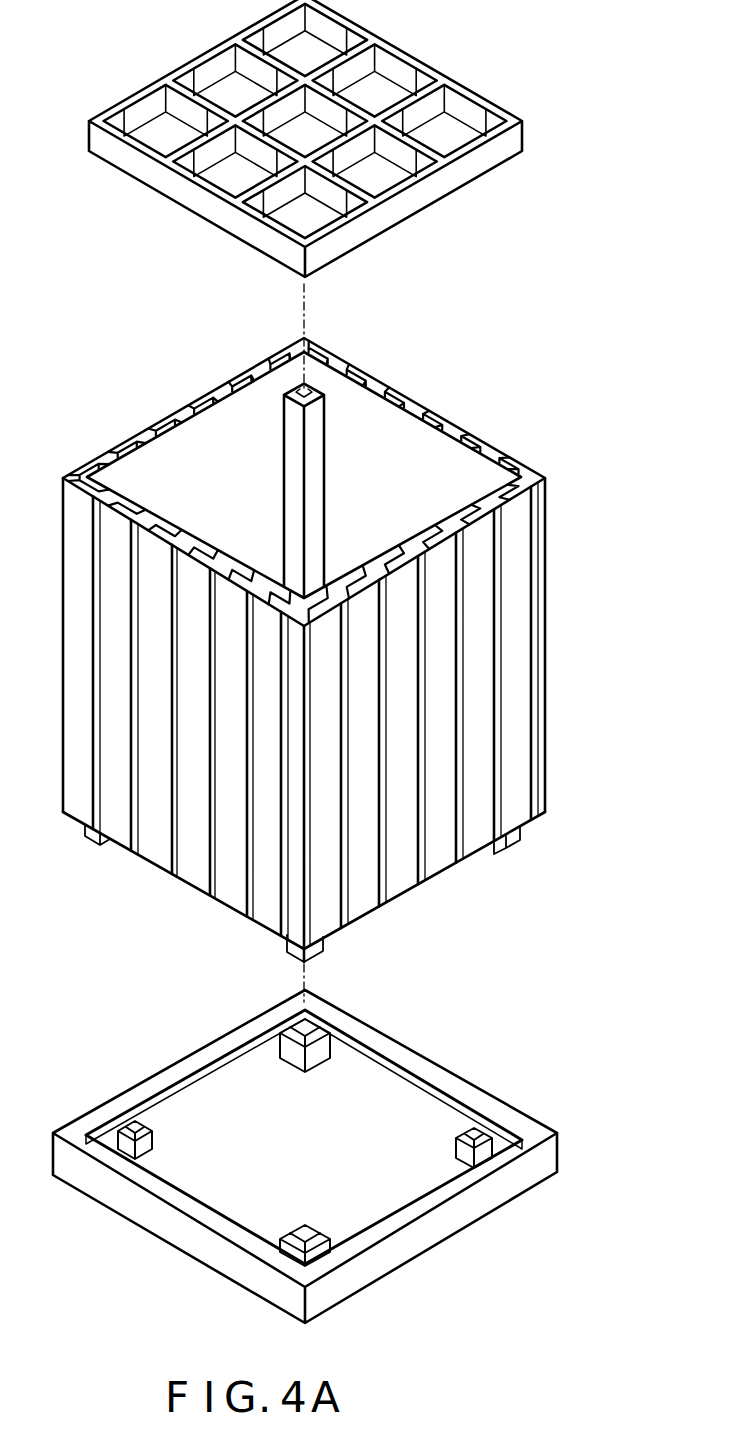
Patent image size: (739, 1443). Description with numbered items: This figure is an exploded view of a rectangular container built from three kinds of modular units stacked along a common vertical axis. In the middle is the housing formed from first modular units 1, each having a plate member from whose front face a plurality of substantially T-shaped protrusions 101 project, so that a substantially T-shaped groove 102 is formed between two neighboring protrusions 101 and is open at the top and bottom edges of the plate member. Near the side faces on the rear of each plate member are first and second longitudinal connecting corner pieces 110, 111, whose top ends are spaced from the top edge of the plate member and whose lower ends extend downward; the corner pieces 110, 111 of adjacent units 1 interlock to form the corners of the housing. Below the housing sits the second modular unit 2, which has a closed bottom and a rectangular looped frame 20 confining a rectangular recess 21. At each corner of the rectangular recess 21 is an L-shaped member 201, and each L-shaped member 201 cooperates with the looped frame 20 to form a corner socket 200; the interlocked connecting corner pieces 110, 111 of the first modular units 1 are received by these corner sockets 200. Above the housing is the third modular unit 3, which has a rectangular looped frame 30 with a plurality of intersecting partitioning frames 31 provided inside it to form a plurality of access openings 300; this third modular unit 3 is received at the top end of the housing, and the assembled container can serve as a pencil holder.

The first modular unit 1 is at (557, 628).
The T-shaped protrusion 101 is at (487, 610).
The T-shaped groove 102 is at (457, 750).
The first connecting corner piece 110 is at (325, 405).
The second connecting corner piece 111 is at (310, 392).
The second modular unit 2 is at (113, 1190).
The rectangular looped frame 20 is at (417, 1063).
The rectangular recess 21 is at (428, 1130).
The corner socket 200 is at (298, 1023).
The L-shaped member 201 is at (307, 1230).
The third modular unit 3 is at (495, 97).
The rectangular looped frame 30 is at (458, 180).
The partitioning frame 31 is at (405, 148).
The access opening 300 is at (395, 93).